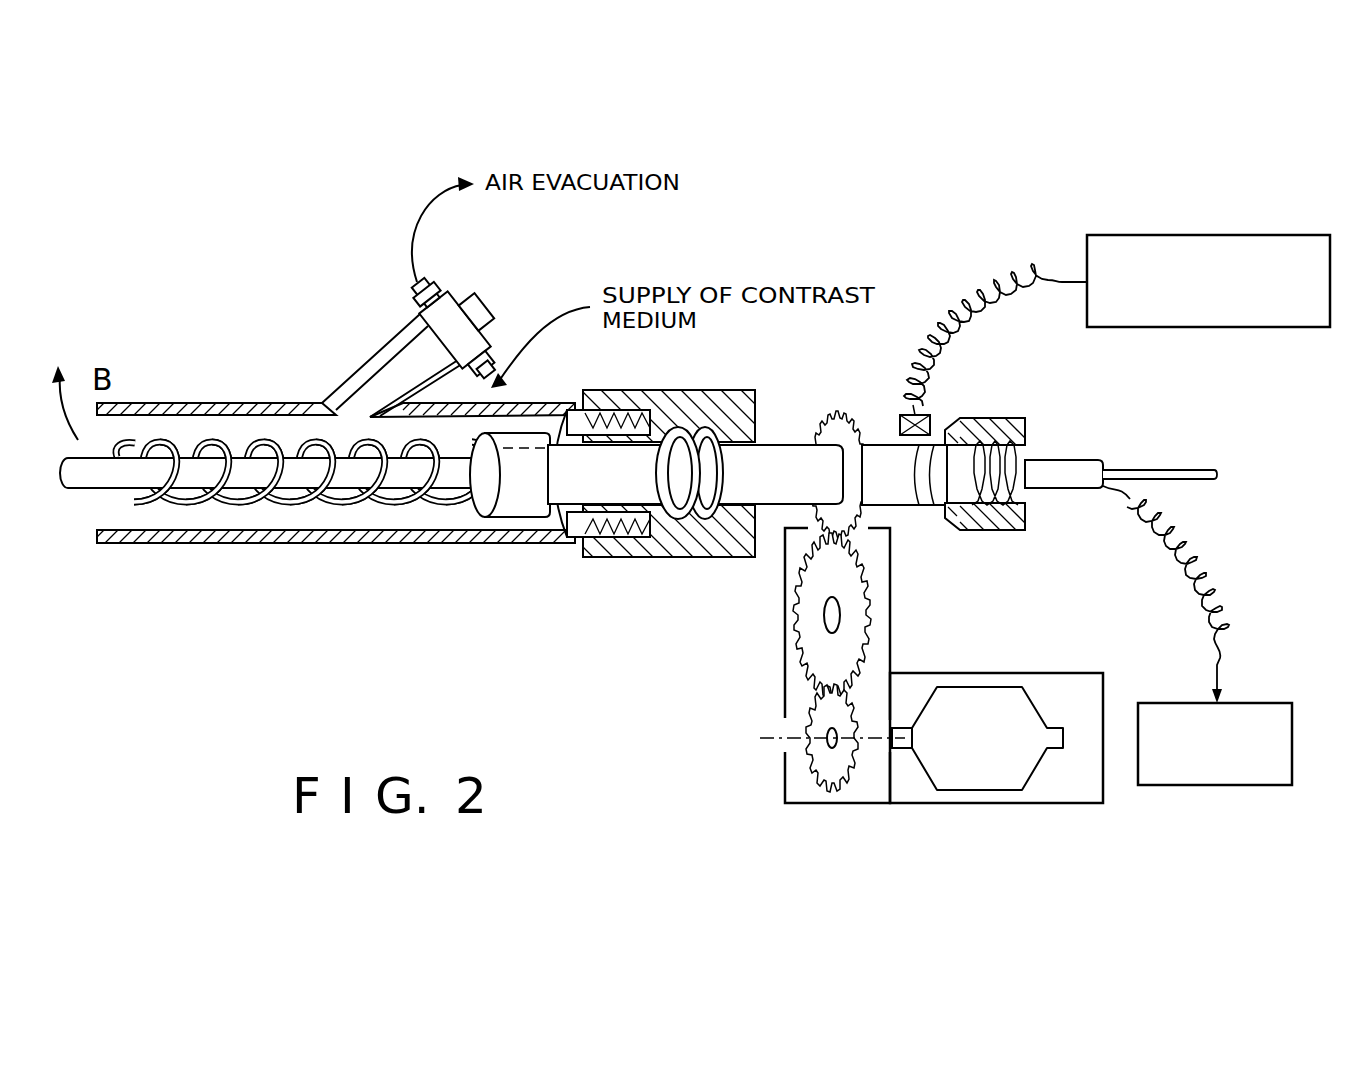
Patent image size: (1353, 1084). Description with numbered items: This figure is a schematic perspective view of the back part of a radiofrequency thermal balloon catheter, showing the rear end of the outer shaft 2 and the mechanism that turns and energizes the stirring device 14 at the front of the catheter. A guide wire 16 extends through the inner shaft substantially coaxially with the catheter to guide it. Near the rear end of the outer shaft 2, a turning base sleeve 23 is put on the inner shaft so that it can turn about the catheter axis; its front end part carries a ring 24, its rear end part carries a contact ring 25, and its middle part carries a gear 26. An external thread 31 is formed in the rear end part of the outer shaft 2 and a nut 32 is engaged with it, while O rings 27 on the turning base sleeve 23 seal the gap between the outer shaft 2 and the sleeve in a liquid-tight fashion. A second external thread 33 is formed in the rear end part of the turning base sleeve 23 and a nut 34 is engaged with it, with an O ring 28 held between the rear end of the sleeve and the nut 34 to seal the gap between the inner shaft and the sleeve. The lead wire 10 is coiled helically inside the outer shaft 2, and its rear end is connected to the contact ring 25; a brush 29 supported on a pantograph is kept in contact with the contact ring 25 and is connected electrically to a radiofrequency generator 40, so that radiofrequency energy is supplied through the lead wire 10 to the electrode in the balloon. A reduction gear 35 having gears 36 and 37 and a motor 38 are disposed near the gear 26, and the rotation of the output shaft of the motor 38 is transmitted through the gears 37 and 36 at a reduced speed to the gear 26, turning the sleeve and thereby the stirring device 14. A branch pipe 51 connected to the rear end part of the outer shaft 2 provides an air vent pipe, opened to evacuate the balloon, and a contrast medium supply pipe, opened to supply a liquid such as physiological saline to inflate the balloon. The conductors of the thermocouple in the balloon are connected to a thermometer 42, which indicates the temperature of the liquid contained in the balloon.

The outer shaft 2 is at (293, 545).
The lead wire 10 is at (183, 500).
The stirring device 14 is at (638, 543).
The guide wire 16 is at (1190, 468).
The turning base sleeve 23 is at (772, 443).
The ring 24 is at (515, 520).
The contact ring 25 is at (917, 490).
The gear 26 is at (858, 415).
The O rings 27 is at (700, 521).
The O ring 28 is at (1028, 467).
The brush 29 is at (900, 425).
The external thread 31 is at (626, 522).
The nut 32 is at (735, 560).
The external thread 33 is at (978, 440).
The nut 34 is at (1025, 425).
The reduction gear 35 is at (824, 804).
The gear 36 is at (812, 658).
The gear 37 is at (856, 770).
The motor 38 is at (985, 791).
The radiofrequency generator 40 is at (1200, 235).
The thermometer 42 is at (1226, 786).
The branch pipe 51 is at (370, 367).